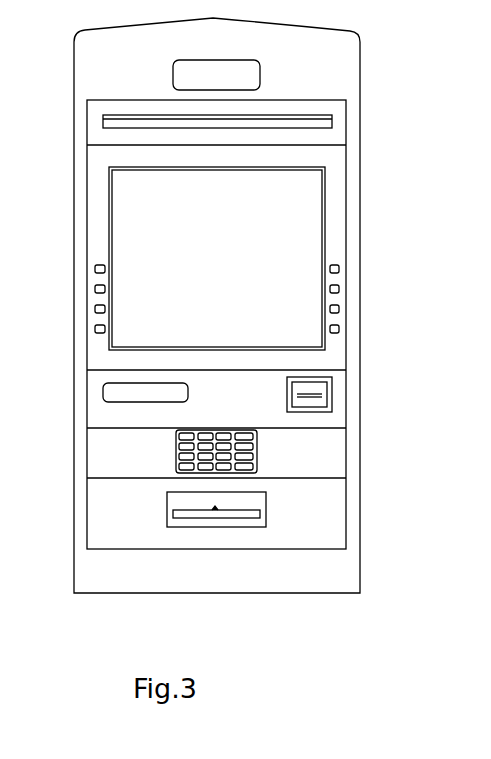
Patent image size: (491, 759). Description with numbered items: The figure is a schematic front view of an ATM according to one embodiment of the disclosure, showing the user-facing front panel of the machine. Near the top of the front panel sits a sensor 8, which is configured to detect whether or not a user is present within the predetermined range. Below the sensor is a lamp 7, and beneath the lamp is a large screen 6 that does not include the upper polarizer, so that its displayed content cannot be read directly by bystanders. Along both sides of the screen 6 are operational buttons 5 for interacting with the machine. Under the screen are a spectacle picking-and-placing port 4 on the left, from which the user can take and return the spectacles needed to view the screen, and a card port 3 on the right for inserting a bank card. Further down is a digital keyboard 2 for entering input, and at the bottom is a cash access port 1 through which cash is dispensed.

The cash access port 1 is at (270, 513).
The digital keyboard 2 is at (273, 453).
The card port 3 is at (335, 394).
The spectacle picking-and-placing port 4 is at (103, 393).
The operational button 5 is at (340, 283).
The screen 6 is at (312, 230).
The lamp 7 is at (332, 128).
The sensor 8 is at (294, 68).